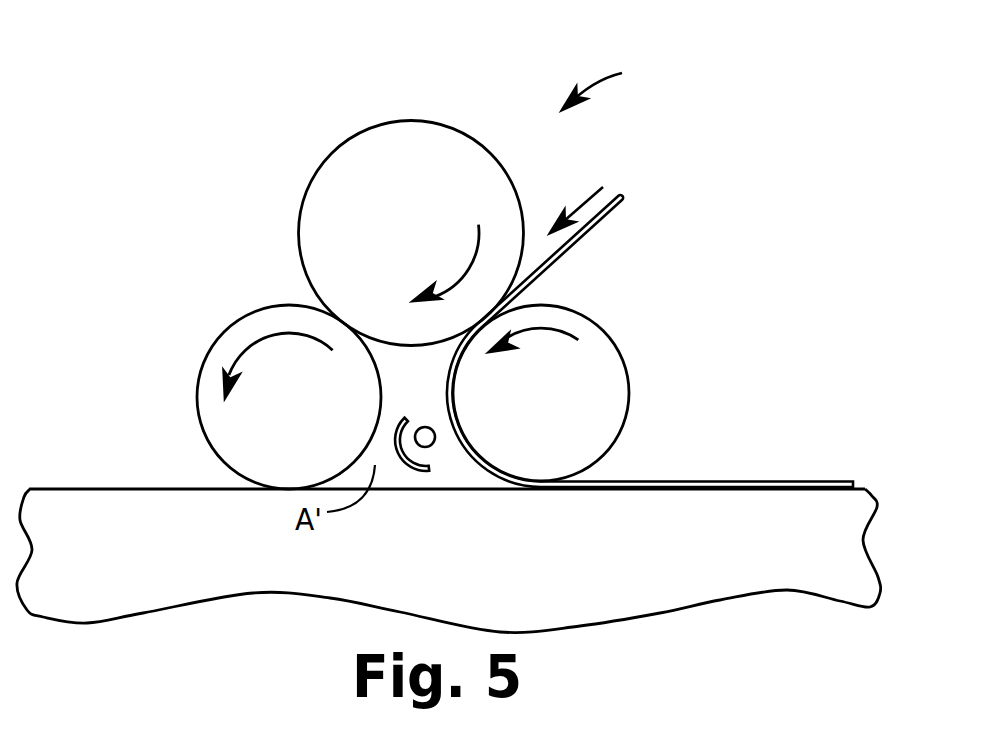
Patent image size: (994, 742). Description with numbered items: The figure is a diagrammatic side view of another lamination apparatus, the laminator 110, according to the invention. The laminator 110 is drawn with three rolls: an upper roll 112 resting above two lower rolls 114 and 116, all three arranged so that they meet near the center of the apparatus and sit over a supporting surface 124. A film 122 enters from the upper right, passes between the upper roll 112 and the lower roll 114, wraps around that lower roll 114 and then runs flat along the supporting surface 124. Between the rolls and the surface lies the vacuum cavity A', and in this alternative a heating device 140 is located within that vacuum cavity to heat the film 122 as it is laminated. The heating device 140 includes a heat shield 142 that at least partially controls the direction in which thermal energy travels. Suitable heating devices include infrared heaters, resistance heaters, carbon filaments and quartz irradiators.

The laminator 110 is at (622, 80).
The upper roller 112 is at (402, 120).
The right lower roller 114 is at (620, 353).
The left lower roller 116 is at (202, 372).
The film 122 is at (612, 213).
The support surface 124 is at (779, 558).
The heating device 140 is at (430, 445).
The heat shield 142 is at (405, 462).